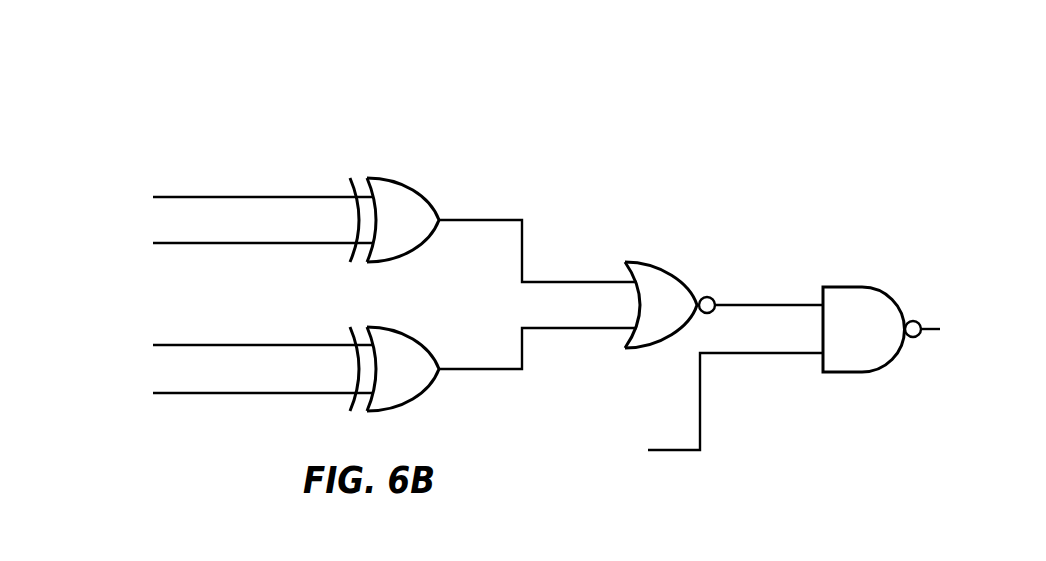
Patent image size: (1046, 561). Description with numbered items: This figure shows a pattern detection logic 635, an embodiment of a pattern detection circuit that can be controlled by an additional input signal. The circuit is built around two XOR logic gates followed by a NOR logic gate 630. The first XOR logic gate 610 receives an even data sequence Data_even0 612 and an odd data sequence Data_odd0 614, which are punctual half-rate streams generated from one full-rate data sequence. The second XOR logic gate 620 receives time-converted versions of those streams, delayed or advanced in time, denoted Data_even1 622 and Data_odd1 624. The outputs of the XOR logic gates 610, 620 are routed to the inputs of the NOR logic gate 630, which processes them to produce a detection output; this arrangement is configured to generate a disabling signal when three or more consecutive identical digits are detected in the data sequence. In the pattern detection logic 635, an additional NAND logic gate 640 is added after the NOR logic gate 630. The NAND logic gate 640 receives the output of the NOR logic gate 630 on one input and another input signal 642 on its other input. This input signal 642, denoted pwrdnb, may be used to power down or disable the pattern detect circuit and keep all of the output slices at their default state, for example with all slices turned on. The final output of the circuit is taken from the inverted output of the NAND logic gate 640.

The pattern detection logic 635 is at (150, 100).
The XOR logic gate 610 is at (430, 192).
The Data_even0 612 is at (333, 193).
The Data_odd0 614 is at (327, 240).
The XOR logic gate 620 is at (430, 332).
The Data_even1 622 is at (333, 340).
The Data_odd1 624 is at (327, 388).
The NOR logic gate 630 is at (662, 262).
The NAND logic gate 640 is at (879, 287).
The input signal 642 is at (635, 460).